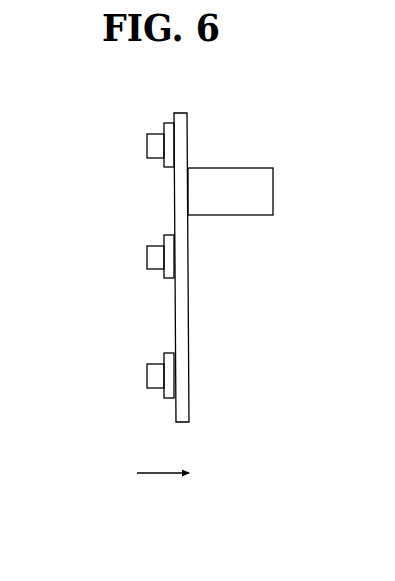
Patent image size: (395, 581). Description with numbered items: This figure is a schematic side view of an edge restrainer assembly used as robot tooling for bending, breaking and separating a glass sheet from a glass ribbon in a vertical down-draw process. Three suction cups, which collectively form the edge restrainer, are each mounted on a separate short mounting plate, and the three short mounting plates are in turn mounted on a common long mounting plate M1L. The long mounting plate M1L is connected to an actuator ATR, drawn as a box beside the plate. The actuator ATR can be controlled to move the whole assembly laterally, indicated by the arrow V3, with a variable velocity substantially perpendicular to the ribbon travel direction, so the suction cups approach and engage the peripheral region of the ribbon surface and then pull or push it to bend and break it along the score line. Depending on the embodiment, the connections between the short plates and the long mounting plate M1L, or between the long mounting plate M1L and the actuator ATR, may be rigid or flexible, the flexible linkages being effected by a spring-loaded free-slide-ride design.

The long mounting plate M1L is at (189, 117).
The actuator ATR is at (230, 191).
The variable velocity V3 is at (176, 473).